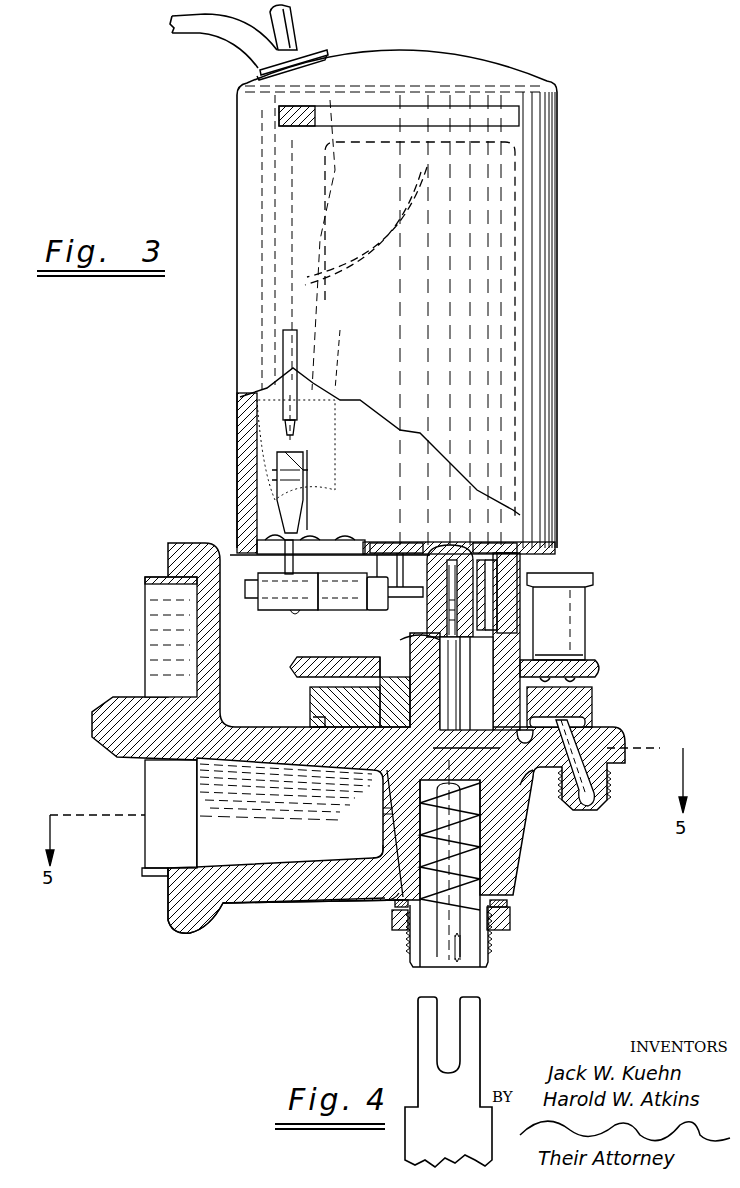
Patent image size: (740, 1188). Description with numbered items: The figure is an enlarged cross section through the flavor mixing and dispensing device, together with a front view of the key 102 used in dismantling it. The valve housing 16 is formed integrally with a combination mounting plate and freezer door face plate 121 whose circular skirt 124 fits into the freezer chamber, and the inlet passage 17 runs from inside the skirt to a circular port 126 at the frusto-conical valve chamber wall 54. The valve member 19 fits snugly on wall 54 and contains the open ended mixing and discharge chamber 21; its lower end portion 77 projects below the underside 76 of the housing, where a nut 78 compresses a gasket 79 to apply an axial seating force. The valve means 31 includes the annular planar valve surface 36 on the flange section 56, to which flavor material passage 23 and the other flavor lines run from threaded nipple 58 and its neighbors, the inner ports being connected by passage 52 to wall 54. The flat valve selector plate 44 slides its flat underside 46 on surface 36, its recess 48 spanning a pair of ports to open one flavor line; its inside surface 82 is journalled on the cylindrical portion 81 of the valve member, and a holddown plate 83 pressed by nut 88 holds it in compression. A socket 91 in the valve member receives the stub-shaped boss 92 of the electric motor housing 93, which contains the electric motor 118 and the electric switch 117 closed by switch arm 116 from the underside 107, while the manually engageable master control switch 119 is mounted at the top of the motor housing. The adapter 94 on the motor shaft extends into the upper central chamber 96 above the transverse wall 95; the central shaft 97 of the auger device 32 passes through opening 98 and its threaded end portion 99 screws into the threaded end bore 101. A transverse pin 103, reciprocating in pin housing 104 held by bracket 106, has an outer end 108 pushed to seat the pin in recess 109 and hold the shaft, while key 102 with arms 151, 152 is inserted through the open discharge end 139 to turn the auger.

In FIG. 3, the electric motor housing 93 is at (540, 242).
In FIG. 3, the cap handle 119 is at (297, 32).
In FIG. 3, the electric motor 118 is at (389, 452).
In FIG. 3, the electric switch 117 is at (277, 473).
In FIG. 3, the underside of the motor housing 107 is at (238, 548).
In FIG. 3, the switch arm 116 is at (285, 566).
In FIG. 3, the outer end of the pin 108 is at (250, 590).
In FIG. 3, the bracket 106 is at (340, 572).
In FIG. 3, the pin housing 104 is at (373, 577).
In FIG. 3, the transverse pin 103 is at (390, 575).
In FIG. 3, the recess 109 is at (421, 553).
In FIG. 3, the threaded end bore 101 is at (487, 513).
In FIG. 3, the adapter 94 is at (440, 563).
In FIG. 3, the threaded end portion 99 is at (460, 620).
In FIG. 3, the socket 91 is at (517, 540).
In FIG. 3, the stub-shaped boss 92 is at (500, 573).
In FIG. 3, the nut 88 is at (570, 615).
In FIG. 3, the cylindrical portion 81 is at (535, 645).
In FIG. 3, the recess 48 is at (557, 717).
In FIG. 3, the annular planar valve surface 36 is at (580, 719).
In FIG. 3, the valve means 31 is at (604, 694).
In FIG. 3, the holddown plate 83 is at (290, 667).
In FIG. 3, the inside surface 82 is at (390, 663).
In FIG. 3, the valve selector plate 44 is at (310, 700).
In FIG. 3, the central shaft 97 is at (410, 665).
In FIG. 3, the opening 98 is at (430, 720).
In FIG. 3, the upper central chamber 96 is at (484, 692).
In FIG. 3, the transverse wall 95 is at (478, 730).
In FIG. 3, the auger device 32 is at (453, 870).
In FIG. 3, the valve chamber wall 54 is at (500, 837).
In FIG. 3, the product mixing and discharge chamber 21 is at (440, 957).
In FIG. 3, the lower end portion 77 is at (490, 960).
In FIG. 3, the nut 78 is at (510, 920).
In FIG. 3, the gasket 79 is at (507, 903).
In FIG. 3, the open discharge end 139 is at (470, 965).
In FIG. 3, the flange section 56 is at (630, 755).
In FIG. 3, the threaded nipple 58 is at (607, 790).
In FIG. 3, the flavor material passage 23 is at (592, 810).
In FIG. 3, the passage 52 is at (536, 784).
In FIG. 3, the circular skirt 124 is at (150, 876).
In FIG. 3, the combination mounting plate and freezer door face plate 121 is at (190, 935).
In FIG. 3, the inlet passage 17 is at (272, 855).
In FIG. 3, the valve housing 16 is at (357, 899).
In FIG. 3, the underside of the housing 76 is at (392, 903).
In FIG. 3, the circular port 126 is at (378, 852).
In FIG. 3, the flat underside 46 is at (322, 762).
In FIG. 3, the valve member 19 is at (400, 792).
In FIG. 4, the key 102 is at (462, 1126).
In FIG. 4, the arm of the key 151 is at (420, 1028).
In FIG. 4, the arm of the key 152 is at (474, 1035).